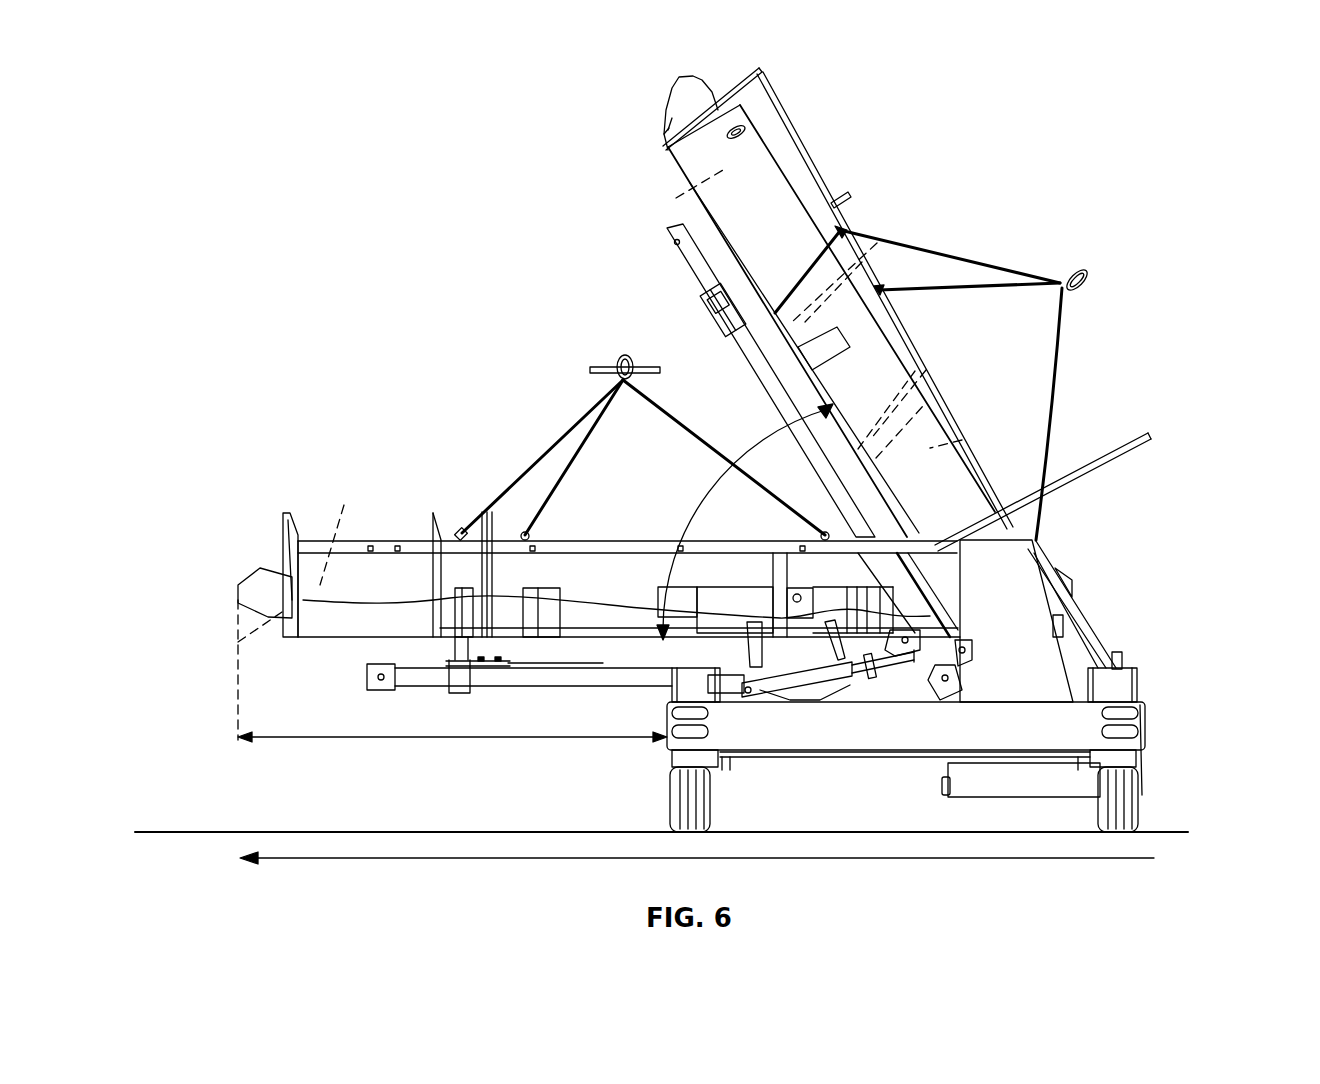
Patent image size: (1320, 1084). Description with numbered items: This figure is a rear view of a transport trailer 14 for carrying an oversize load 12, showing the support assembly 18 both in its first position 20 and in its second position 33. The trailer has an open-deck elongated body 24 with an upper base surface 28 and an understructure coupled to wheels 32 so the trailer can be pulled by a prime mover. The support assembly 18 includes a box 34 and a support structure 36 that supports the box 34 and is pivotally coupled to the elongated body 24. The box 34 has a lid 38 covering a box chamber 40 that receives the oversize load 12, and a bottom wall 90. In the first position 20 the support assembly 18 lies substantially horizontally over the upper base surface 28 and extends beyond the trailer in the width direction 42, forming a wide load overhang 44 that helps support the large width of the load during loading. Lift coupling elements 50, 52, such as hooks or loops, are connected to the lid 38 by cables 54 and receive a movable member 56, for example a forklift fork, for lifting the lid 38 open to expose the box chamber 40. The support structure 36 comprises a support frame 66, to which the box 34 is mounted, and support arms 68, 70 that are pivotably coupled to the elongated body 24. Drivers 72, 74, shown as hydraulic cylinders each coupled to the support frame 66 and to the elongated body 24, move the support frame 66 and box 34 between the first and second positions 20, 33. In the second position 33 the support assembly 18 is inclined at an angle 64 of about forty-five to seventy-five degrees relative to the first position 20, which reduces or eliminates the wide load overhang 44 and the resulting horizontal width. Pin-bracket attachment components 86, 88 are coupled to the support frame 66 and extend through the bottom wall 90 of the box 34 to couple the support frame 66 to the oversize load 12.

The oversize load 12 is at (928, 368).
The transport trailer 14 is at (1196, 572).
The support assembly 18 is at (760, 158).
The first position 20 is at (203, 507).
The elongated body 24 is at (898, 738).
The upper base surface 28 is at (890, 702).
The wheels 32 is at (1140, 813).
The second position 33 is at (842, 163).
The box 34 is at (742, 103).
The support structure 36 is at (716, 318).
The lid 38 is at (828, 203).
The box chamber 40 is at (996, 434).
The width direction 42 is at (541, 860).
The wide load overhang 44 is at (468, 735).
The lift coupling element 50 is at (856, 316).
The lift coupling element 52 is at (616, 383).
The cables 54 is at (680, 425).
The movable member 56 is at (590, 371).
The angle 64 is at (708, 492).
The support frame 66 is at (702, 300).
The support arm 68 is at (580, 626).
The support arm 70 is at (805, 522).
The driver 72 is at (814, 713).
The driver 74 is at (792, 678).
The pin-bracket attachment component 86 is at (880, 243).
The pin-bracket attachment component 88 is at (945, 393).
The bottom wall 90 is at (668, 162).